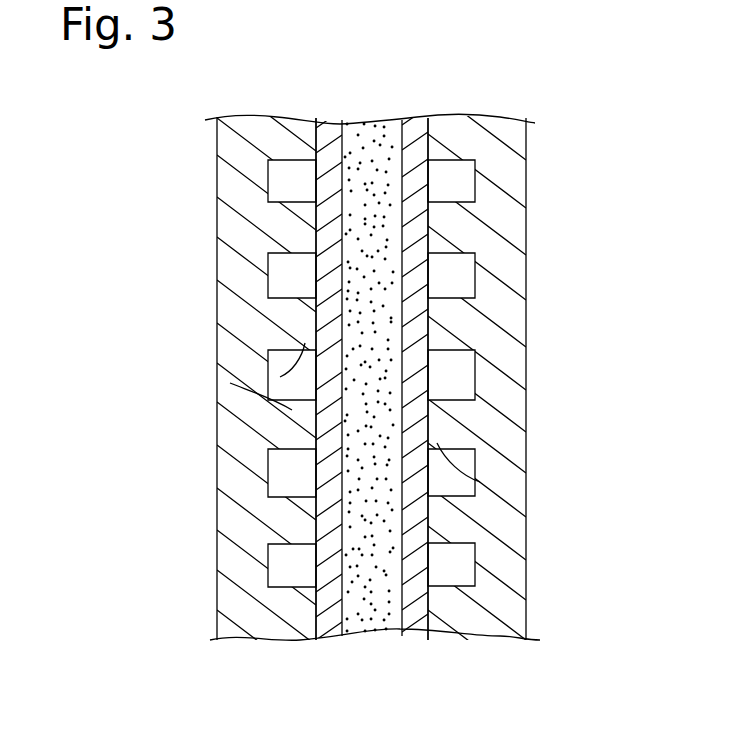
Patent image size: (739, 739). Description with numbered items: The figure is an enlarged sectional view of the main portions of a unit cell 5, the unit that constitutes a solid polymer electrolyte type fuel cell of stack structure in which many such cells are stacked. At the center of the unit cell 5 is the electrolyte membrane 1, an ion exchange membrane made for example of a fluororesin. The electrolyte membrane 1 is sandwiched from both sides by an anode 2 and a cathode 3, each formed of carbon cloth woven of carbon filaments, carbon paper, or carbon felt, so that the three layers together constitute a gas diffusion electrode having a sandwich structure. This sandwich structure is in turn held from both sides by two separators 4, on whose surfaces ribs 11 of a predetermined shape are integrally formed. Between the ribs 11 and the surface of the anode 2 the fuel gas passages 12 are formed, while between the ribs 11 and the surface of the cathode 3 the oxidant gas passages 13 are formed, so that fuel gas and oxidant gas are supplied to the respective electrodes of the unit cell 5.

The electrolyte membrane 1 is at (373, 120).
The anode 2 is at (417, 120).
The cathode 3 is at (326, 123).
The separator 4 is at (255, 117).
The unit cell 5 is at (216, 143).
The rib 11 is at (280, 377).
The fuel gas passage 12 is at (455, 274).
The oxidant gas passage 13 is at (275, 268).